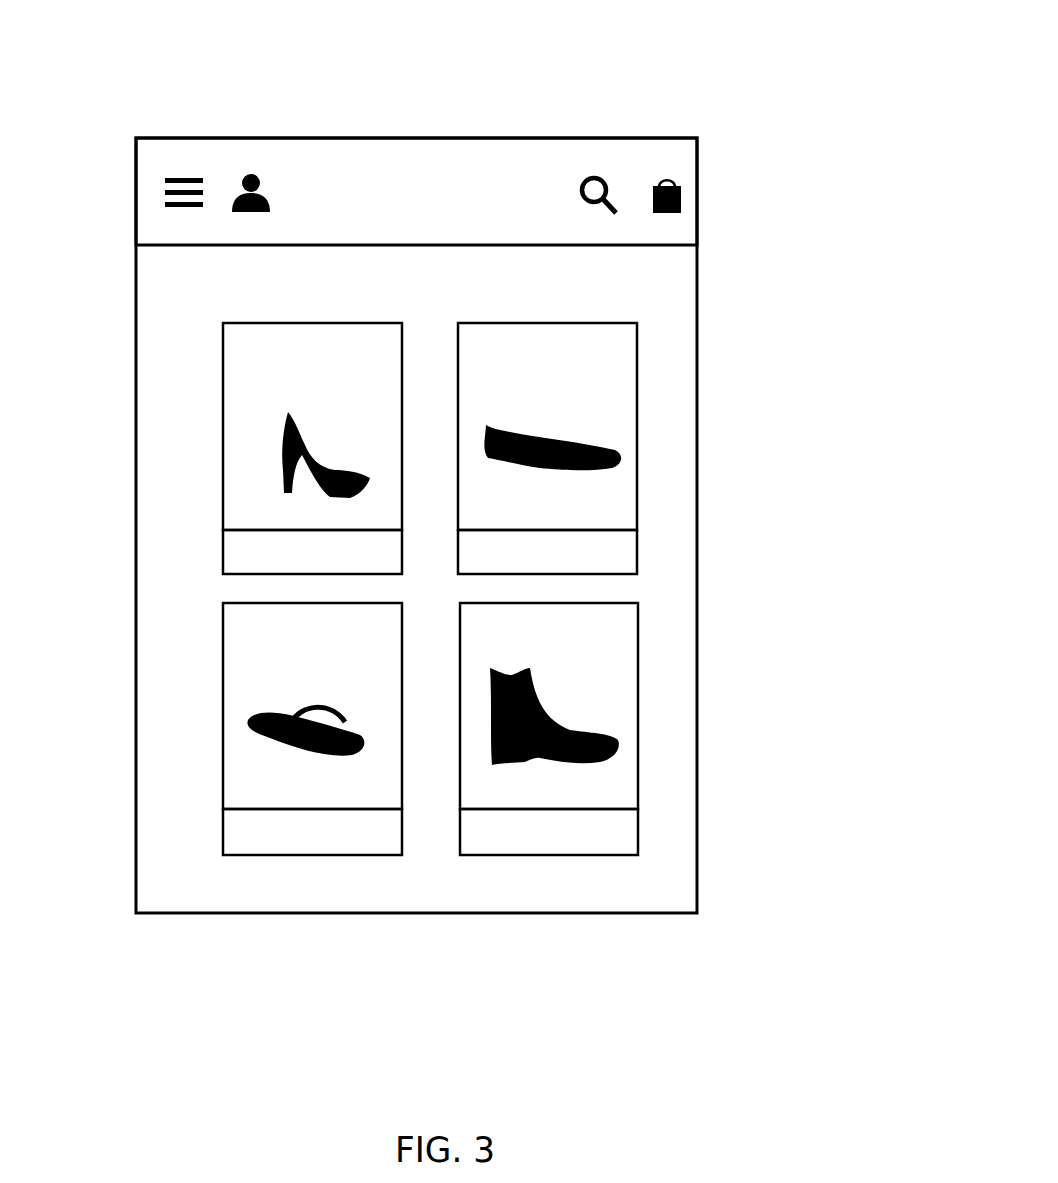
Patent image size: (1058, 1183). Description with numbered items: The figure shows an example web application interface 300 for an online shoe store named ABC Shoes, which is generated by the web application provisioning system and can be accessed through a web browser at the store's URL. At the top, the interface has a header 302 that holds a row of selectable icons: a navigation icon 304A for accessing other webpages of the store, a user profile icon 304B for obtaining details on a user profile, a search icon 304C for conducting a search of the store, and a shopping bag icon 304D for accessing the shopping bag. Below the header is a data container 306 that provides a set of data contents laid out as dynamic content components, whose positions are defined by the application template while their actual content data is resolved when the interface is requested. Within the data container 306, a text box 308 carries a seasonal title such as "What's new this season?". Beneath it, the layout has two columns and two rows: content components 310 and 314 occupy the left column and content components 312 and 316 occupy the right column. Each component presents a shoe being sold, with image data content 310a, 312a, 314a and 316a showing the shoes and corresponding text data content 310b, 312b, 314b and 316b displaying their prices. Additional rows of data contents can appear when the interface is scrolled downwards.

The web application interface 300 is at (622, 55).
The header 302 is at (163, 156).
The navigation icon 304A is at (188, 161).
The user profile icon 304B is at (271, 172).
The search icon 304C is at (606, 158).
The shopping bag icon 304D is at (679, 171).
The data container 306 is at (172, 267).
The text box 308 is at (585, 292).
The content component 310 is at (212, 319).
The image data content 310a is at (223, 437).
The text data content 310b is at (223, 553).
The content component 312 is at (645, 327).
The image data content 312a is at (637, 428).
The text data content 312b is at (637, 543).
The content component 314 is at (213, 604).
The image data content 314a is at (225, 707).
The text data content 314b is at (225, 822).
The content component 316 is at (647, 607).
The image data content 316a is at (638, 707).
The text data content 316b is at (638, 830).